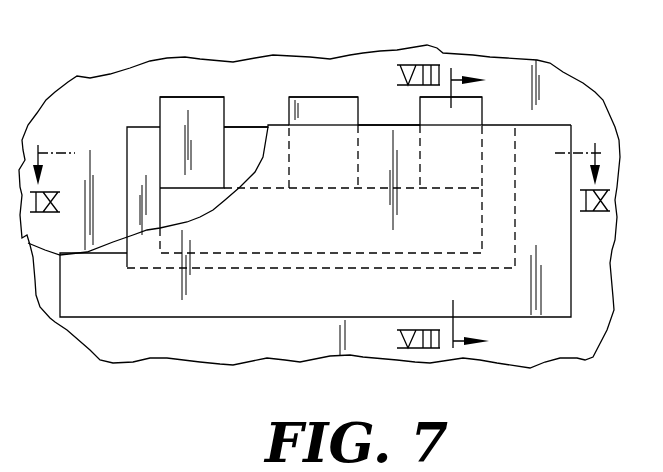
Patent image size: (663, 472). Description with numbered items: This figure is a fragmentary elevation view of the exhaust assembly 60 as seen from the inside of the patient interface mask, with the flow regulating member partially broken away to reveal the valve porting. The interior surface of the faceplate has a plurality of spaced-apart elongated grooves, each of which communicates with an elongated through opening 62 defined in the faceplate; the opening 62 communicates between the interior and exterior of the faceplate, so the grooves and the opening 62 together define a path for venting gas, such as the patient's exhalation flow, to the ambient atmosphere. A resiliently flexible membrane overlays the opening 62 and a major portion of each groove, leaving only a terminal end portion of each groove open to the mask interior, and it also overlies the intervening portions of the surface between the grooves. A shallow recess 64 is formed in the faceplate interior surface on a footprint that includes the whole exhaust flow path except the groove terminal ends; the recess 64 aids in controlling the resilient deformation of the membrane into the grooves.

The exhaust assembly 60 is at (158, 110).
The elongated through opening 62 is at (198, 205).
The shallow recess 64 is at (142, 152).